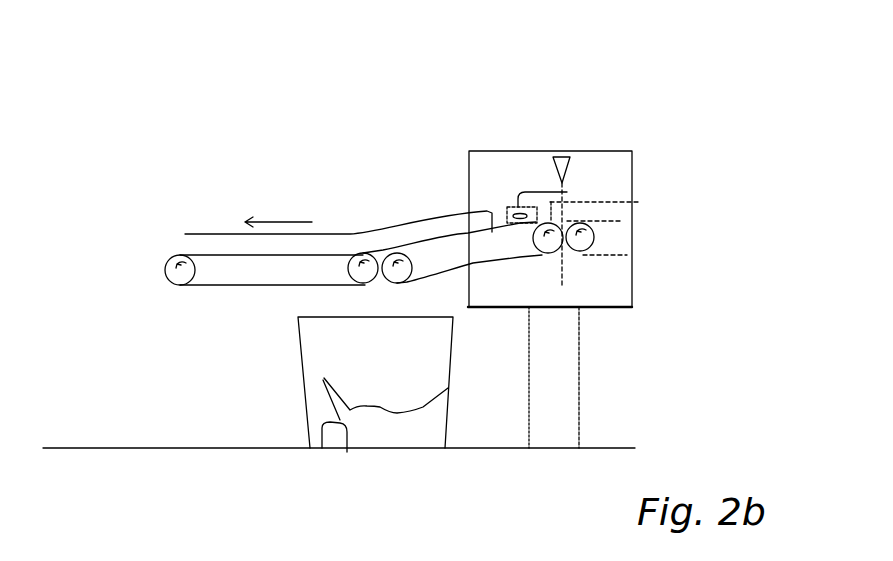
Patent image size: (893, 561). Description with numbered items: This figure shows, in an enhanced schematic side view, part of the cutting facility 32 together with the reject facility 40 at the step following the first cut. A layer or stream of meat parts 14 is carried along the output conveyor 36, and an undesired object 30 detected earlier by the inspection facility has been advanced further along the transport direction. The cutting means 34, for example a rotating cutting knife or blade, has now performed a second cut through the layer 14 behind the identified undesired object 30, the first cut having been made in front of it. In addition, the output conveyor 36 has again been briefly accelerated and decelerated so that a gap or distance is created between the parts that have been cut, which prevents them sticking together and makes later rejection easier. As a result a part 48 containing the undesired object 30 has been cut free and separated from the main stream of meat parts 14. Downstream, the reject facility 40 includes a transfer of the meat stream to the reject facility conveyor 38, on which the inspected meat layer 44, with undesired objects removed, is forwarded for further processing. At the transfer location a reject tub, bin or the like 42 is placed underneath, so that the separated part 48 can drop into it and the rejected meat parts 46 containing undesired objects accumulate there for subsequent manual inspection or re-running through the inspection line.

The layer or stream of meat parts 14 is at (602, 202).
The undesired object 30 is at (567, 191).
The cutting facility 32 is at (493, 133).
The cutting means 34 is at (556, 167).
The output conveyor 36 is at (487, 265).
The reject facility conveyor 38 is at (198, 285).
The reject facility 40 is at (297, 191).
The reject tub, bin or the like 42 is at (305, 400).
The inspected meat layer 44 is at (215, 233).
The rejected meat parts 46 is at (347, 452).
The separated part 48 is at (508, 207).